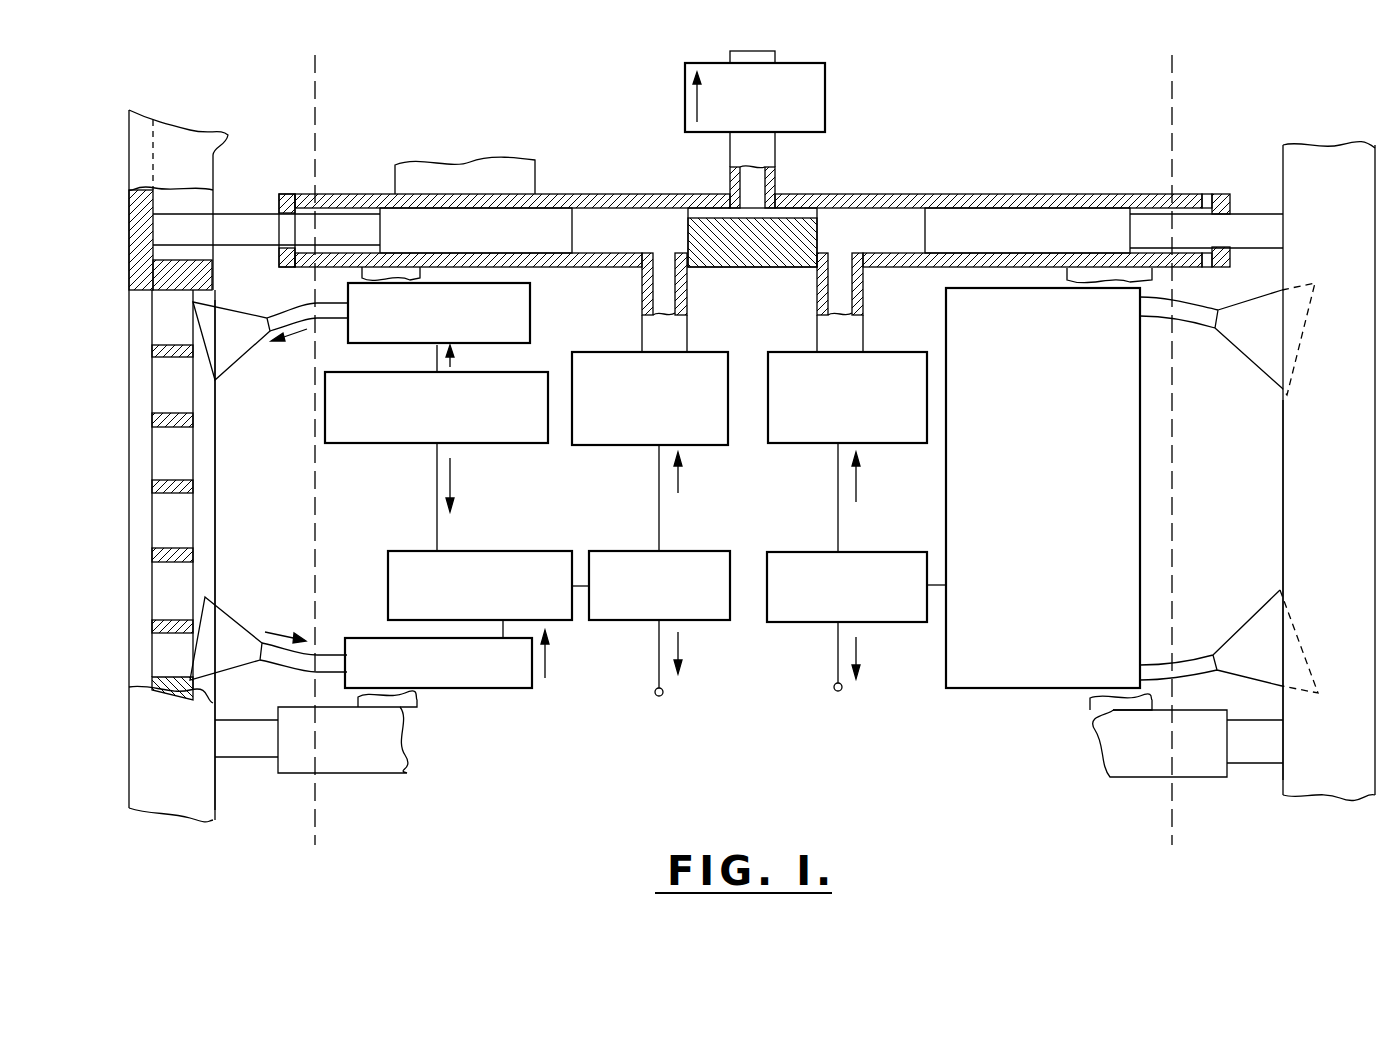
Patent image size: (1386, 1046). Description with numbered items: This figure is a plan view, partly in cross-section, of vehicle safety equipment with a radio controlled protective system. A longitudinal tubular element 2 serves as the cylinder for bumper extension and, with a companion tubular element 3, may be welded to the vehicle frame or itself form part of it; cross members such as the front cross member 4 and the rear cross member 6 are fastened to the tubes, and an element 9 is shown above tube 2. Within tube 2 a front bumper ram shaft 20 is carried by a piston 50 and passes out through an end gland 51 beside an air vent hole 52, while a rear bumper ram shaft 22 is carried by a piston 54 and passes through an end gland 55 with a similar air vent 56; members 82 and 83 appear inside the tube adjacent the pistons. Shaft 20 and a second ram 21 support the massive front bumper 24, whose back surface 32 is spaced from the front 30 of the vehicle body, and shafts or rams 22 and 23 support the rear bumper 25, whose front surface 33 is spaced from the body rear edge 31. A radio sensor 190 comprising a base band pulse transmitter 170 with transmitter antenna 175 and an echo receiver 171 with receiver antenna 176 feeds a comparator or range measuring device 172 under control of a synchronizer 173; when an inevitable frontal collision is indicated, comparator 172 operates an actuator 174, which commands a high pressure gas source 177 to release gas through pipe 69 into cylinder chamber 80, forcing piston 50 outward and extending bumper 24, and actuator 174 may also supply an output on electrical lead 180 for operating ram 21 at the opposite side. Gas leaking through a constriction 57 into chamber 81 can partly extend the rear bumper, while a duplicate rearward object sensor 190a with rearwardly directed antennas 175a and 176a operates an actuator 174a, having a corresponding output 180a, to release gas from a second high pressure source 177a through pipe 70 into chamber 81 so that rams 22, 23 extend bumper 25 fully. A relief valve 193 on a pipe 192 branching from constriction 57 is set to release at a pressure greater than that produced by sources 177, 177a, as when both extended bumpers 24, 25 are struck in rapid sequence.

The longitudinal tubular element 2 is at (742, 201).
The longitudinal tubular element 3 is at (342, 774).
The front cross member 4 is at (410, 700).
The rear cross member 6 is at (1090, 700).
The frame 9 is at (472, 162).
The front bumper ram shaft 20 is at (240, 214).
The ram 21 is at (240, 758).
The rear bumper ram shaft 22 is at (1260, 214).
The ram 23 is at (1250, 768).
The front bumper 24 is at (167, 810).
The rear bumper 25 is at (1330, 792).
The front of vehicle body 30 is at (314, 515).
The body rear edge 31 is at (1172, 515).
The back surface of front bumper 32 is at (215, 460).
The front surface of rear bumper 33 is at (1282, 440).
The piston 50 is at (540, 220).
The end gland 51 is at (280, 255).
The air vent hole 52 is at (297, 194).
The piston 54 is at (1005, 215).
The end gland 55 is at (1222, 193).
The air vent 56 is at (1207, 194).
The constriction 57 is at (785, 212).
The pipe 69 is at (688, 322).
The branching pipe 70 is at (817, 325).
The cylinder chamber 80 is at (598, 222).
The chamber 81 is at (895, 225).
The left piston 82 is at (380, 230).
The right piston 83 is at (1130, 228).
The base band pulse transmitter 170 is at (532, 310).
The echo reception and detector system 171 is at (532, 658).
The comparator 172 is at (508, 551).
The system synchronizer 173 is at (398, 445).
The safety system actuator 174 is at (690, 551).
The actuator 174a is at (882, 552).
The transmitter antenna 175 is at (243, 345).
The rearwardly directed transmitter antenna 175a is at (1220, 335).
The receiver antenna 176 is at (222, 606).
The rearwardly directed receiver antenna 176a is at (1247, 617).
The high pressure gas source 177 is at (633, 445).
The high pressure source 177a is at (892, 352).
The electrical lead 180 is at (665, 692).
The actuator output terminal 180a is at (843, 687).
The forward radio pre-collision object sensor 190 is at (732, 512).
The rearward radio object sensor 190a is at (1000, 690).
The pipe 192 is at (776, 170).
The relief valve 193 is at (827, 97).